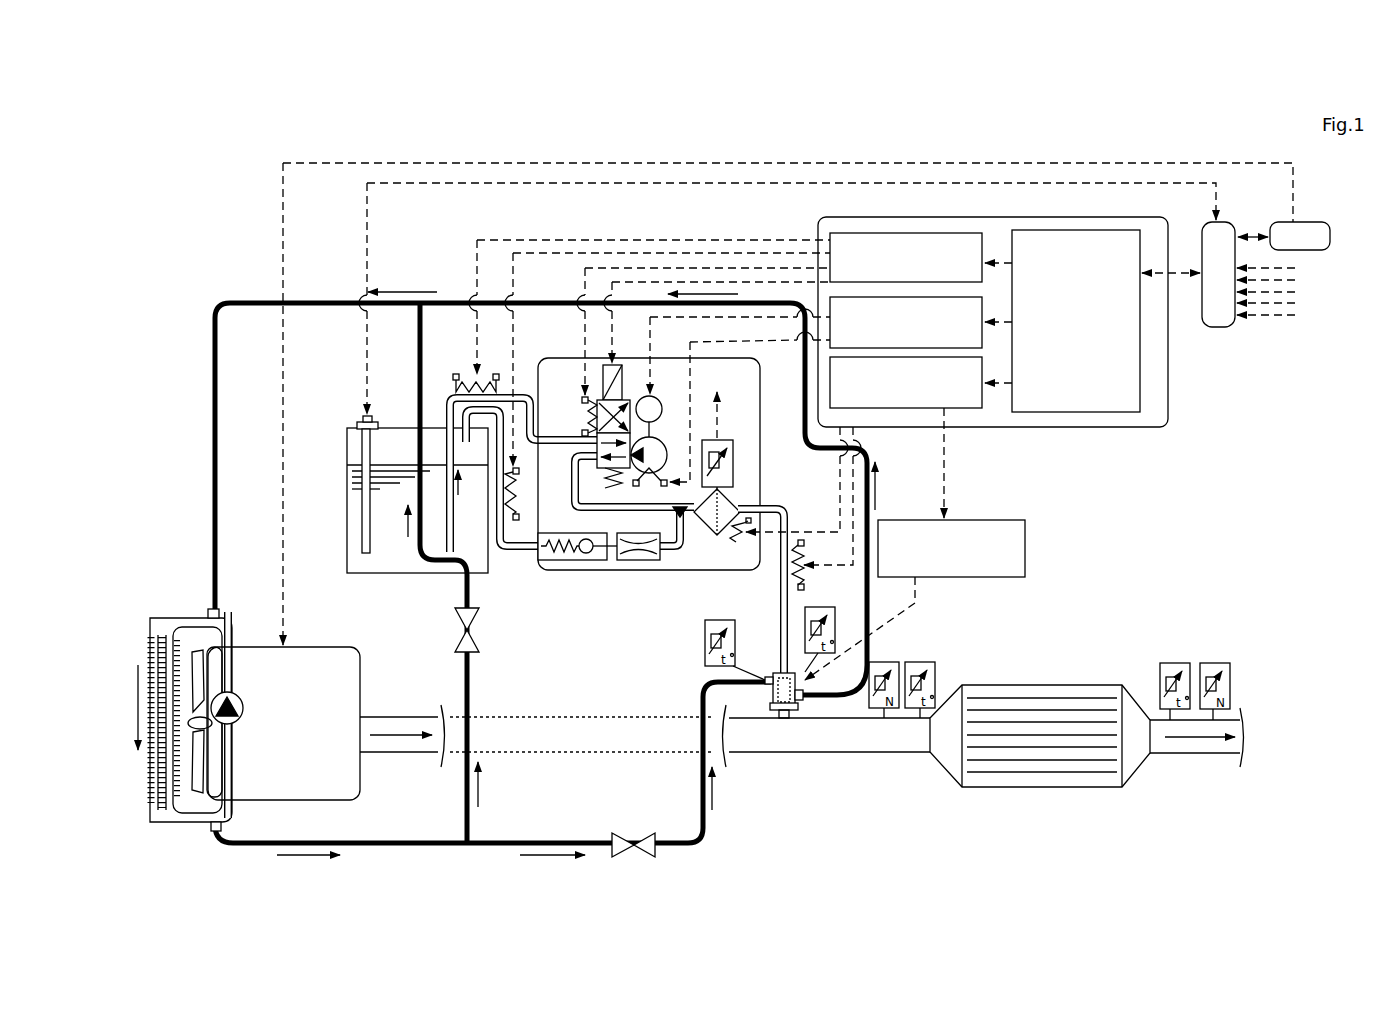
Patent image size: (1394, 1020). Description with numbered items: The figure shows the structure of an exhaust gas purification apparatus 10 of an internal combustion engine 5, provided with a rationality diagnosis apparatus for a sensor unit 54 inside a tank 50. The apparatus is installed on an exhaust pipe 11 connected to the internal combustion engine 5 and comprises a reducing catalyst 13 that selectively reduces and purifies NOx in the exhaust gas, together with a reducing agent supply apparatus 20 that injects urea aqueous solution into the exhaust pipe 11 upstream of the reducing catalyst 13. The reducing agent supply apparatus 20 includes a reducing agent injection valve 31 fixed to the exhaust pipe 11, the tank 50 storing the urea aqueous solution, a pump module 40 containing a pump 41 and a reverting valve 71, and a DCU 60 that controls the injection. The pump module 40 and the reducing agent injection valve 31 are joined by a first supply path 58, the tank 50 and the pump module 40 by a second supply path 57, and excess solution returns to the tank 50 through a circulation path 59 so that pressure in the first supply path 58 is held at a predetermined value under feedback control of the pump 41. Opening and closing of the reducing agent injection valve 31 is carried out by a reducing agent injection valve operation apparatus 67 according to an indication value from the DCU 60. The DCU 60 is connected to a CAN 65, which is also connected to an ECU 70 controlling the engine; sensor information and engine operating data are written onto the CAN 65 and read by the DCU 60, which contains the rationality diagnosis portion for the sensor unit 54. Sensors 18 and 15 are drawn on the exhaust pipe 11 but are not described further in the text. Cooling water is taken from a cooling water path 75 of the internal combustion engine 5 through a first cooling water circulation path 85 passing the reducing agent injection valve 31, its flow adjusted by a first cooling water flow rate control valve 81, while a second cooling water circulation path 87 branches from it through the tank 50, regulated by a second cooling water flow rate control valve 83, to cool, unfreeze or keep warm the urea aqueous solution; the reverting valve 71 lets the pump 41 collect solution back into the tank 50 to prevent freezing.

The exhaust gas purification apparatus 10 is at (1163, 152).
The reducing agent supply apparatus 20 is at (441, 279).
The internal combustion engine 5 is at (360, 778).
The cooling water path 75 is at (232, 640).
The tank 50 is at (403, 575).
The sensor unit 54 is at (357, 425).
The second supply path 57 is at (486, 378).
The circulation path 59 is at (497, 556).
The second cooling water flow rate control valve 83 is at (479, 641).
The second cooling water circulation path 87 is at (470, 689).
The first cooling water flow rate control valve 81 is at (626, 833).
The pump module 40 is at (646, 570).
The reverting valve 71 is at (618, 364).
The pump 41 is at (666, 440).
The first supply path 58 is at (782, 591).
The reducing agent injection valve 31 is at (777, 673).
The NOx sensor 18 is at (898, 661).
The exhaust temperature sensor 15 is at (936, 664).
The reducing catalyst 13 is at (1049, 685).
The exhaust pipe 11 is at (820, 753).
The first cooling water circulation path 85 is at (866, 450).
The reducing agent injection valve operation apparatus 67 is at (988, 520).
The CAN 65 is at (1218, 328).
The ECU 70 is at (1312, 251).
The DCU 60 is at (838, 358).